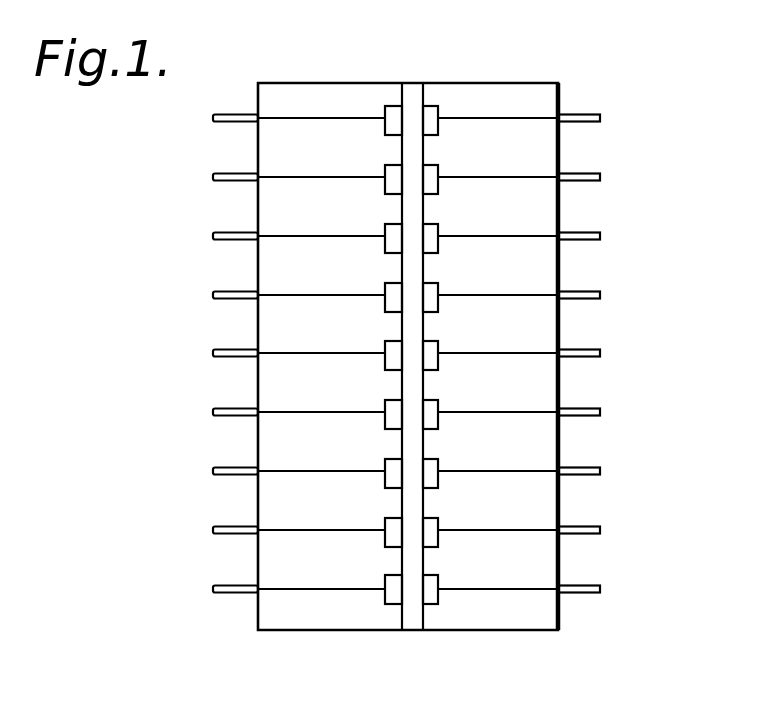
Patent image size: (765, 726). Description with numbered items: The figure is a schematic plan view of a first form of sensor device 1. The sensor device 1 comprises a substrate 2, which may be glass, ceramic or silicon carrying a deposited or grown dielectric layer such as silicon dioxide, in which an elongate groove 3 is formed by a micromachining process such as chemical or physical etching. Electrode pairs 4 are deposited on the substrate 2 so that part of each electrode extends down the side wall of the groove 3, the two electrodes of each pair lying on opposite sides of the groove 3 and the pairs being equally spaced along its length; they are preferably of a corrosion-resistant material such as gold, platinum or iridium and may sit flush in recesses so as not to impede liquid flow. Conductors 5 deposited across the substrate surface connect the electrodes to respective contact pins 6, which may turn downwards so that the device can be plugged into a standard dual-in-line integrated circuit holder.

The sensor device 1 is at (537, 70).
The substrate 2 is at (559, 100).
The elongate groove 3 is at (408, 90).
The electrode pairs 4 is at (431, 606).
The conductors 5 is at (542, 590).
The contact pins 6 is at (590, 478).